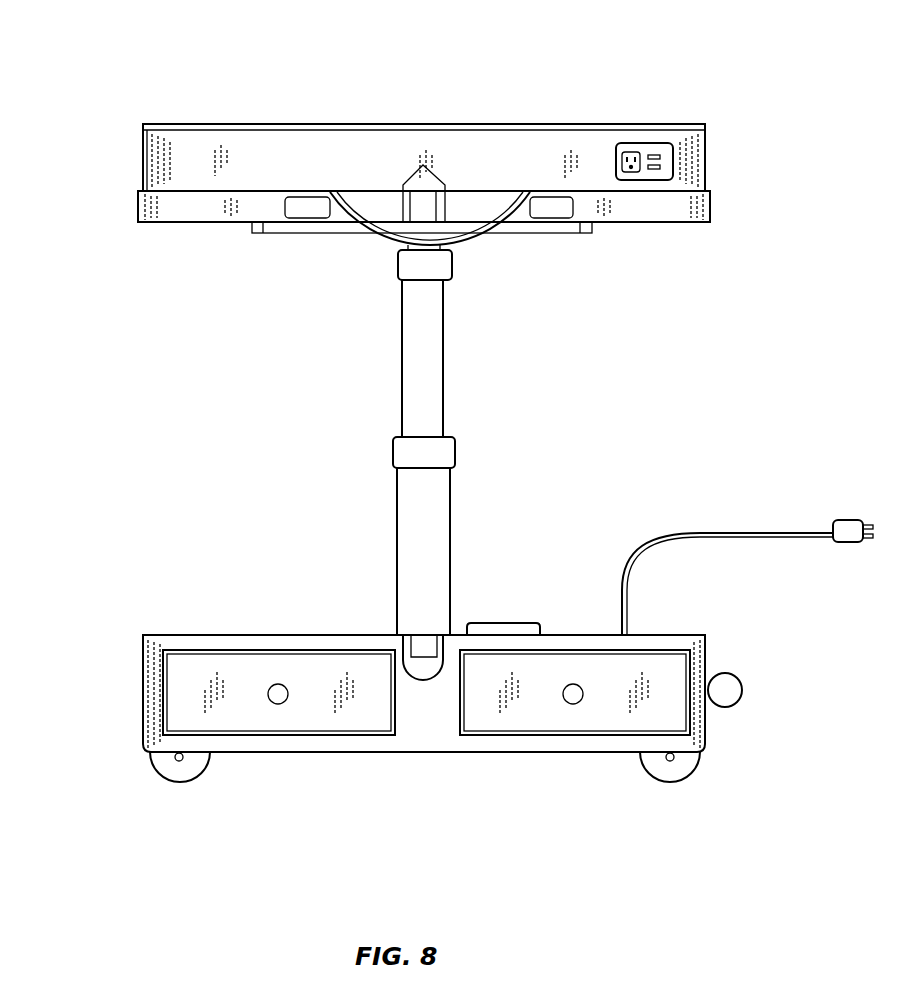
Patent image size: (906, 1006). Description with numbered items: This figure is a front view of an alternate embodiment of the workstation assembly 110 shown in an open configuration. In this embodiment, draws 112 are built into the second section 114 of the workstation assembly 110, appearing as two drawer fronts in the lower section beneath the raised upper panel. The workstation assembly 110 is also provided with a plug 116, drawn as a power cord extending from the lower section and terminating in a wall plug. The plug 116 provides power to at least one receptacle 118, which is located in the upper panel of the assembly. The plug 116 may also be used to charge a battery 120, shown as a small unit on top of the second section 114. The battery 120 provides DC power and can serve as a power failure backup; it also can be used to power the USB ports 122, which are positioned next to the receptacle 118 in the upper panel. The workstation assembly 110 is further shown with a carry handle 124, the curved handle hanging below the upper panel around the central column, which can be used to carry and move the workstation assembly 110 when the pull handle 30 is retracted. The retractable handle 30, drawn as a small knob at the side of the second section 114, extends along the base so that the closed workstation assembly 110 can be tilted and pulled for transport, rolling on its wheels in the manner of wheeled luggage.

The workstation assembly 110 is at (142, 87).
The draws 112 is at (373, 718).
The second section 114 is at (183, 683).
The plug 116 is at (617, 590).
The receptacle 118 is at (637, 158).
The battery 120 is at (487, 628).
The USB ports 122 is at (657, 153).
The carry handle 124 is at (372, 233).
The retractable handle 30 is at (742, 690).